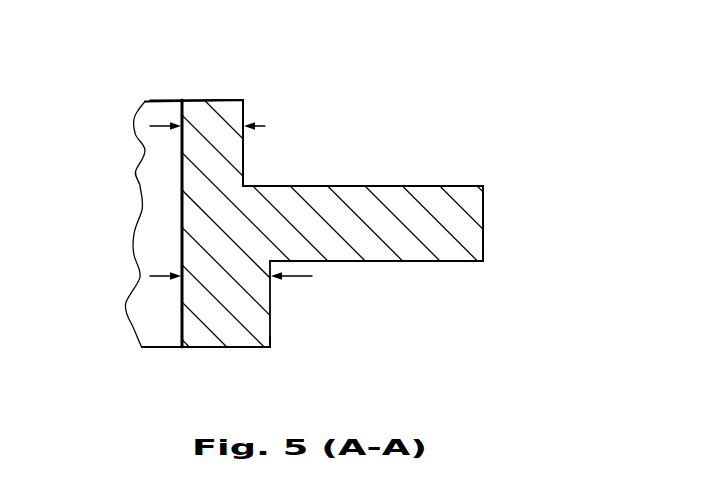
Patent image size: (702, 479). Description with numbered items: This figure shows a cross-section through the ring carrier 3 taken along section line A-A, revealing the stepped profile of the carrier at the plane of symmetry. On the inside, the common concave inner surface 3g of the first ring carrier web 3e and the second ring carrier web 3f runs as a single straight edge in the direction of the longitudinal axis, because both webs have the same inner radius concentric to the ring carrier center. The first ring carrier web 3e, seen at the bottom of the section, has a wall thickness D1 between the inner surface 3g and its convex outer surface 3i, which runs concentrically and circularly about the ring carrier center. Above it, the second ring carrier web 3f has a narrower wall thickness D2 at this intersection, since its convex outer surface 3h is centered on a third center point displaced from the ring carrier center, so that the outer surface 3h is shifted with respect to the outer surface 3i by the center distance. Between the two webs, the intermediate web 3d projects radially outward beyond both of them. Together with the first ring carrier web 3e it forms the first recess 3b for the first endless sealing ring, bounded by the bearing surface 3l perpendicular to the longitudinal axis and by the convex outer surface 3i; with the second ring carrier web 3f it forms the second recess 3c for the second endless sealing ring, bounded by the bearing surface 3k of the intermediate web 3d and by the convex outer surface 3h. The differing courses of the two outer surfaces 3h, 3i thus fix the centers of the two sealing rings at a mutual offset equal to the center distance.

The ring carrier 3 is at (466, 82).
The first recess 3b is at (351, 264).
The second recess 3c is at (262, 150).
The intermediate web 3d is at (476, 214).
The first ring carrier web 3e is at (211, 335).
The second ring carrier web 3f is at (196, 110).
The concave inner surface 3g is at (172, 162).
The convex outer surface of the second ring carrier web 3h is at (252, 170).
The convex outer surface of the first ring carrier web 3i is at (280, 346).
The bearing surface of the intermediate web 3k is at (461, 178).
The bearing surface 3l is at (465, 270).
The wall thickness of the first ring carrier web D1 is at (248, 282).
The narrower wall thickness of the second ring carrier web D2 is at (215, 120).